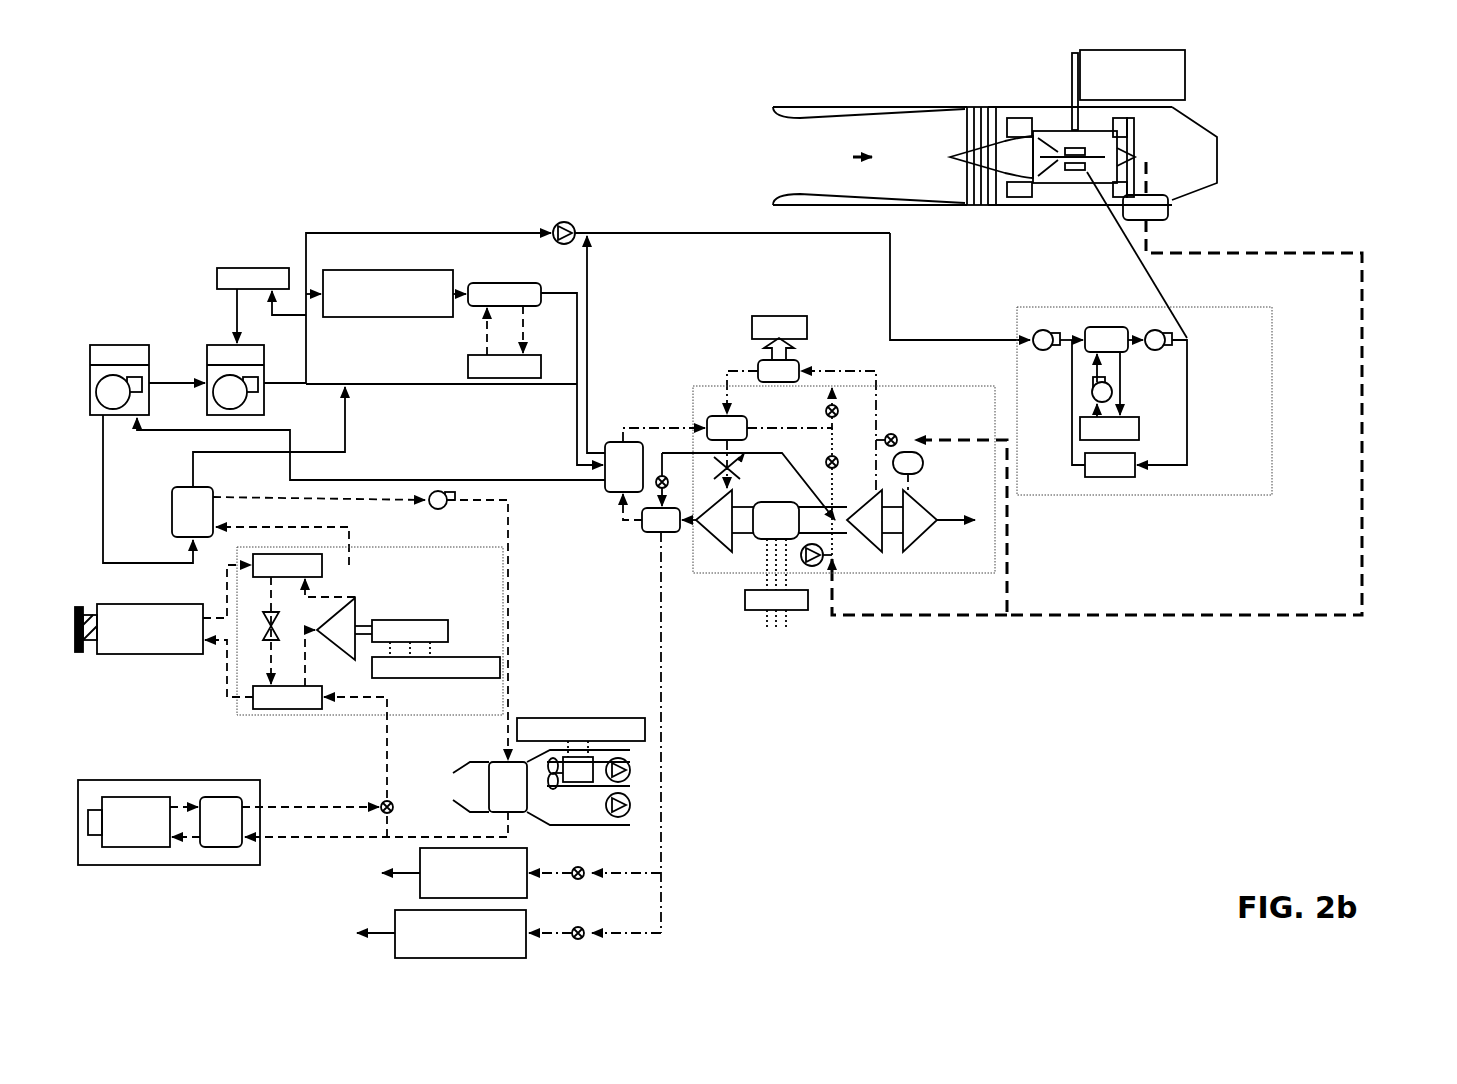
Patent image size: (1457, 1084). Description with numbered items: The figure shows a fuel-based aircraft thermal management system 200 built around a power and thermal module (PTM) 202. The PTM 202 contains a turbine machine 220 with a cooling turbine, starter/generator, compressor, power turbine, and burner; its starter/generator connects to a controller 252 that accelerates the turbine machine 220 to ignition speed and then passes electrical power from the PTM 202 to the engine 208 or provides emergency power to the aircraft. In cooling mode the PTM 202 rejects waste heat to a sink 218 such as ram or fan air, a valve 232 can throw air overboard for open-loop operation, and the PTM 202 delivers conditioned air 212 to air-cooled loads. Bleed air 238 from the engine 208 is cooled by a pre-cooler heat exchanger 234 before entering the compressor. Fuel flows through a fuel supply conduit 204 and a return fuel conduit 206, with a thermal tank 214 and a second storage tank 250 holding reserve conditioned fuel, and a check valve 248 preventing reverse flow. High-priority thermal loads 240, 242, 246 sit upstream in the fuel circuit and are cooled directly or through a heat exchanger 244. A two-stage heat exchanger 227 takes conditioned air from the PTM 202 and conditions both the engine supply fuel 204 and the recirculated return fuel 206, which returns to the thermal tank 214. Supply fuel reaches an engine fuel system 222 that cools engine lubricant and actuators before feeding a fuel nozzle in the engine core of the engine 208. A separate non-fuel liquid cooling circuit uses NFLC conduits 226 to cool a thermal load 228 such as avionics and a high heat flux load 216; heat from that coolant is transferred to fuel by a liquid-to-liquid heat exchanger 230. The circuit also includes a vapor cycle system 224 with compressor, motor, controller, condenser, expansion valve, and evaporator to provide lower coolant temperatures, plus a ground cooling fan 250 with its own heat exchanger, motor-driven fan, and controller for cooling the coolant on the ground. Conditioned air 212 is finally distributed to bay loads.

The system 200 is at (236, 75).
The power and thermal module (PTM) 202 is at (710, 385).
The fuel supply conduit 204 is at (308, 231).
The return fuel conduit 206 is at (370, 480).
The engine 208 is at (1015, 108).
The conditioned air 212 is at (660, 895).
The thermal tank 214 is at (113, 415).
The load 216 is at (138, 797).
The sink 218 is at (778, 314).
The turbine machine 220 is at (847, 535).
The engine fuel system 222 is at (1162, 495).
The vapor cycle system (VCS) 224 is at (357, 715).
The NFLC conduits 226 is at (508, 530).
The two-stage heat exchanger 227 is at (610, 493).
The thermal load 228 is at (125, 654).
The liquid-to-liquid heat exchanger 230 is at (182, 486).
The valve 232 is at (826, 408).
The pre-cooler heat exchanger 234 is at (1168, 208).
The bleed air 238 is at (1362, 455).
The high-priority thermal load 240 is at (250, 266).
The high-priority thermal load 242 is at (390, 317).
The heat exchanger 244 is at (487, 282).
The high-priority thermal load 246 is at (472, 354).
The check valve 248 is at (557, 222).
The storage tank / ground cooling fan 250 is at (227, 343).
The controller 252 is at (745, 598).